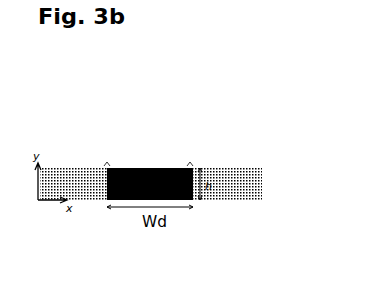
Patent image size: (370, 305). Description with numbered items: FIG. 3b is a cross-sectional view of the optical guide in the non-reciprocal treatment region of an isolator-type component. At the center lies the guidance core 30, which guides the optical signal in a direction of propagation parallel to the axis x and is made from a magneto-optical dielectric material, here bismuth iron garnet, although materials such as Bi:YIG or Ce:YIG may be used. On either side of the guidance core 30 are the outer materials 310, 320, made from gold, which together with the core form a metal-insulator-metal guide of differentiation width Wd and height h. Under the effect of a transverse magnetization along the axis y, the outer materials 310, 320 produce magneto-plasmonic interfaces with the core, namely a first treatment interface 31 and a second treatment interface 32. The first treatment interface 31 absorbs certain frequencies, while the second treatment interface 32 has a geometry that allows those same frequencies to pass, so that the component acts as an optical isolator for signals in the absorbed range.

The guidance core 30 is at (127, 200).
The first treatment interface 31 is at (107, 162).
The second treatment interface 32 is at (190, 162).
The outer material 310 is at (83, 202).
The outer material 320 is at (218, 194).